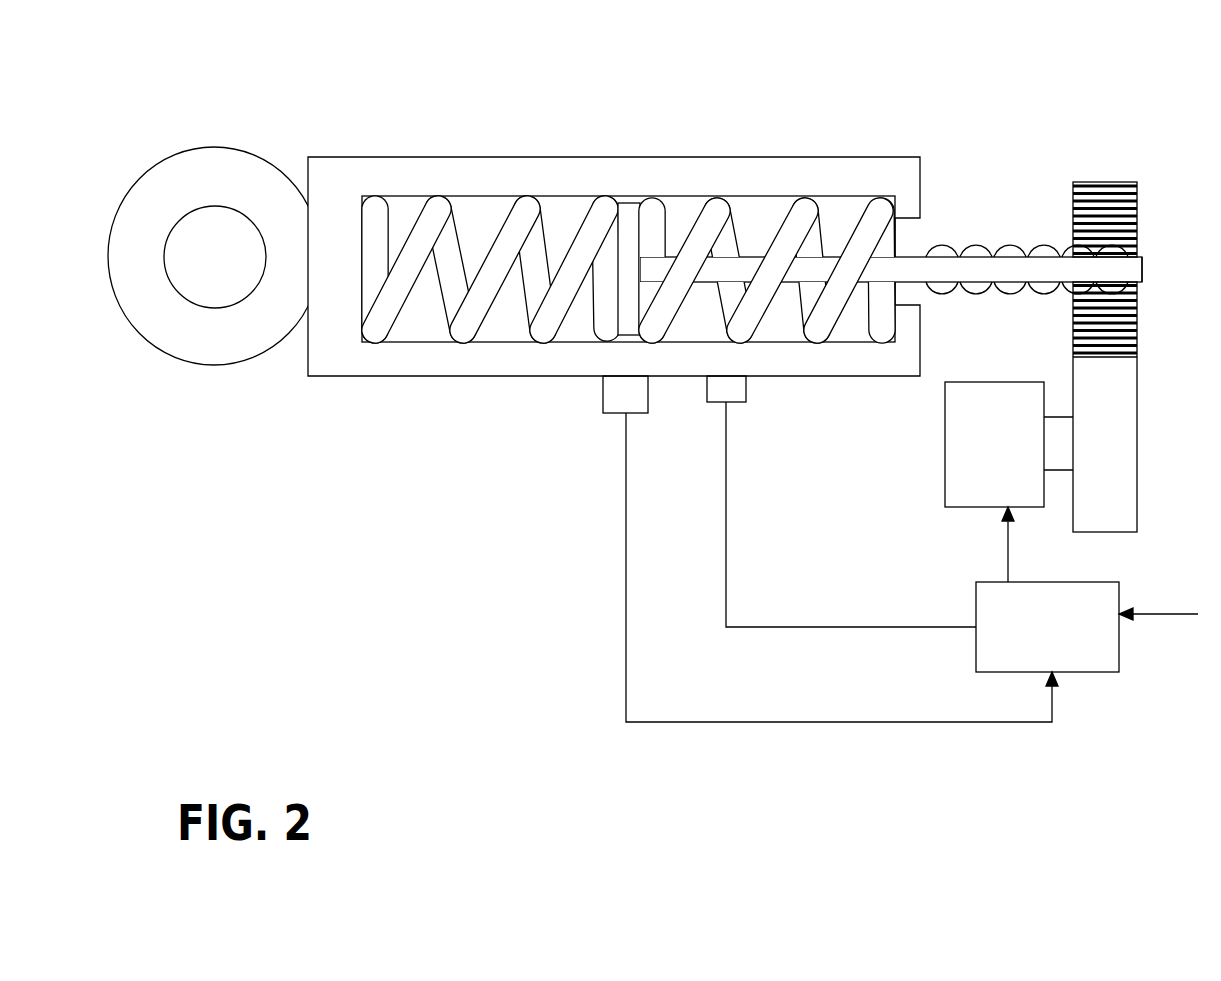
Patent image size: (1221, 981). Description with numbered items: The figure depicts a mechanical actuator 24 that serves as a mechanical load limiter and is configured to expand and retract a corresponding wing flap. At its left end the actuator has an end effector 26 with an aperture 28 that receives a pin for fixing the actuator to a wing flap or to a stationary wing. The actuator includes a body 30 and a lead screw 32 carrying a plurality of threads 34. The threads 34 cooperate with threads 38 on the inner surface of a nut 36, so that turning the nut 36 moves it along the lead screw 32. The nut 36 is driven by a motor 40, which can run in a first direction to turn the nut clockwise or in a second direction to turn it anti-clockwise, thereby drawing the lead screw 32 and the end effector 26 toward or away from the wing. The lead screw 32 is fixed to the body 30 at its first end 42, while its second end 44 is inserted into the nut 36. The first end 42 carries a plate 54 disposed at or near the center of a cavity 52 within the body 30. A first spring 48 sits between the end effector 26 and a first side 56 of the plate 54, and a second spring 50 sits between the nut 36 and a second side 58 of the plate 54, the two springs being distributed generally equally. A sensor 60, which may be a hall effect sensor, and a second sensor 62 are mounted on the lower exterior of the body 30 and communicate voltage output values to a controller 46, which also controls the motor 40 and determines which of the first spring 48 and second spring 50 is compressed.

The mechanical actuator 24 is at (757, 361).
The end effector 26 is at (214, 274).
The aperture 28 is at (188, 312).
The body 30 is at (558, 157).
The lead screw 32 is at (1027, 202).
The threads 34 is at (1012, 243).
The nut 36 is at (1088, 180).
The threads 38 is at (1142, 250).
The motor 40 is at (1146, 365).
The first end 42 is at (927, 190).
The second end 44 is at (1145, 265).
The controller 46 is at (1122, 578).
The first spring 48 is at (460, 345).
The second spring 50 is at (764, 338).
The cavity 52 is at (490, 256).
The plate 54 is at (626, 197).
The first side 56 is at (607, 323).
The second side 58 is at (648, 328).
The sensor 60 is at (608, 418).
The second sensor 62 is at (748, 392).